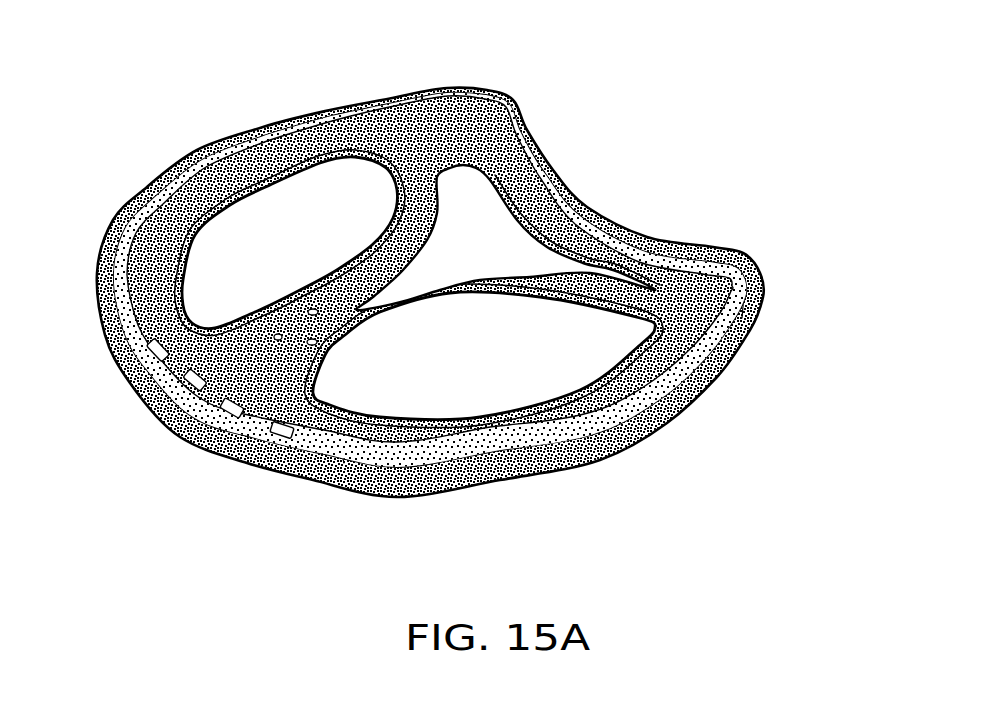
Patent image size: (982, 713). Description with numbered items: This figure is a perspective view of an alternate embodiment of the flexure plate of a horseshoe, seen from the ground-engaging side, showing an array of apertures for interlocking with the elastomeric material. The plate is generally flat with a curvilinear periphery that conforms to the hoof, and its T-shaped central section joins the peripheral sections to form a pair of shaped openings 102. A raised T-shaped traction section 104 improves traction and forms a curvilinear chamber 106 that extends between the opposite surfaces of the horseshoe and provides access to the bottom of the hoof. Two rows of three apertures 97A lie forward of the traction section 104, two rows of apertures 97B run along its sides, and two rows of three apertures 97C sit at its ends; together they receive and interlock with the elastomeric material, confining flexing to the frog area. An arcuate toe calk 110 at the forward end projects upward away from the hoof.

The shaped openings 102 is at (182, 161).
The traction section 104 is at (508, 231).
The curvilinear chamber 106 is at (472, 207).
The toe calk 110 is at (178, 430).
The apertures 97A is at (352, 262).
The apertures 97B is at (398, 190).
The apertures 97C is at (497, 93).